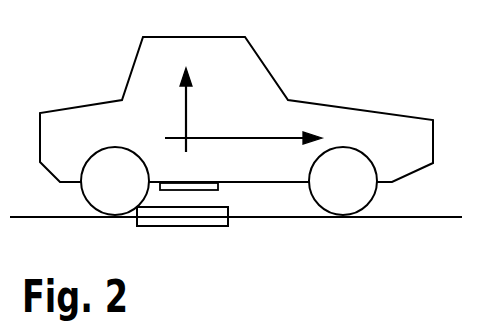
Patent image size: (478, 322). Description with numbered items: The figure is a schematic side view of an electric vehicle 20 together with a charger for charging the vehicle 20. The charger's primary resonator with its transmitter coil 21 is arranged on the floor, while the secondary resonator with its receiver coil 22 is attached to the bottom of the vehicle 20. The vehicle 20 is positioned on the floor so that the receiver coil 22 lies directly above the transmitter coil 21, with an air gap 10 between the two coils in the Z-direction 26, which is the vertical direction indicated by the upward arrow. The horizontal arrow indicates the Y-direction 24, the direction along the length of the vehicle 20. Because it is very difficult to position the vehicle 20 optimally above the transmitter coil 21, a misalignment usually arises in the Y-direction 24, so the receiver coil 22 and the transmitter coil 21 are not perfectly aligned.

The air gap 10 is at (175, 197).
The electric vehicle 20 is at (133, 63).
The transmitter coil 21 is at (207, 226).
The receiver coil 22 is at (218, 188).
The Y-direction 24 is at (248, 136).
The Z-direction 26 is at (189, 107).